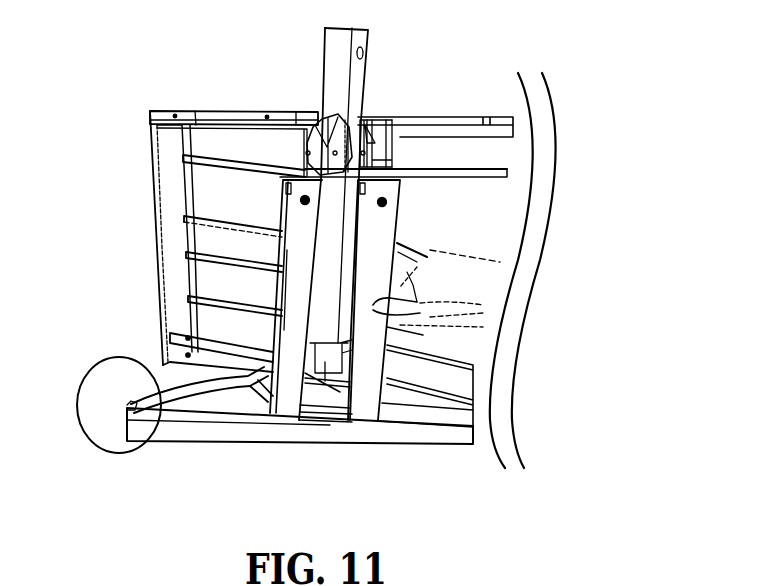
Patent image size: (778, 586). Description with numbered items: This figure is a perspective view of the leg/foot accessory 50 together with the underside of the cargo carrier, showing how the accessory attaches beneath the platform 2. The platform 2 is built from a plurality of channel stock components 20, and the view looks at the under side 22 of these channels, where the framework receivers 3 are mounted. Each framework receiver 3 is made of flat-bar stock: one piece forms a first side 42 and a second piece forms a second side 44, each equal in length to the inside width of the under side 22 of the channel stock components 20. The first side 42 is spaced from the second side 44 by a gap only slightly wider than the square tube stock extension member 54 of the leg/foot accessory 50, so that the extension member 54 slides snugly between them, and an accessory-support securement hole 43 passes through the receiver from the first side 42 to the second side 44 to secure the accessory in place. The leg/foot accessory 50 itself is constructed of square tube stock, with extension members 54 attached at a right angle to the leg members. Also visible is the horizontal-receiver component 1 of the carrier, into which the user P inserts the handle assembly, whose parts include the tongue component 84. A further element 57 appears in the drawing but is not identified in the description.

The horizontal-receiver component 1 is at (326, 50).
The platform 2 is at (197, 262).
The framework receivers 3 is at (322, 124).
The channel stock components 20 is at (430, 178).
The under side 22 is at (228, 148).
The first side 42 is at (367, 124).
The accessory-support securement hole 43 is at (395, 162).
The second side 44 is at (372, 140).
The leg/foot accessory 50 is at (177, 441).
The extension member 54 is at (284, 185).
The lower support plate 57 is at (302, 273).
The tongue component 84 is at (323, 368).
The user P is at (427, 277).